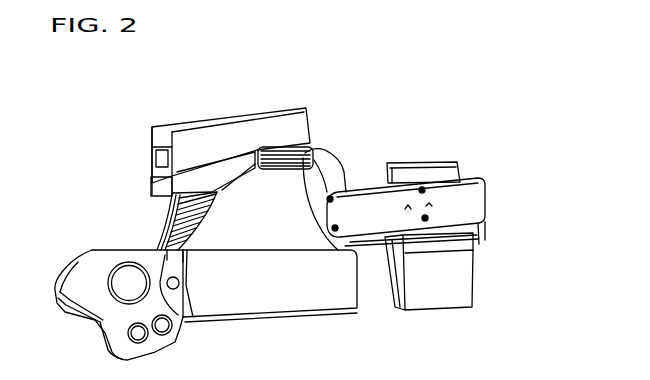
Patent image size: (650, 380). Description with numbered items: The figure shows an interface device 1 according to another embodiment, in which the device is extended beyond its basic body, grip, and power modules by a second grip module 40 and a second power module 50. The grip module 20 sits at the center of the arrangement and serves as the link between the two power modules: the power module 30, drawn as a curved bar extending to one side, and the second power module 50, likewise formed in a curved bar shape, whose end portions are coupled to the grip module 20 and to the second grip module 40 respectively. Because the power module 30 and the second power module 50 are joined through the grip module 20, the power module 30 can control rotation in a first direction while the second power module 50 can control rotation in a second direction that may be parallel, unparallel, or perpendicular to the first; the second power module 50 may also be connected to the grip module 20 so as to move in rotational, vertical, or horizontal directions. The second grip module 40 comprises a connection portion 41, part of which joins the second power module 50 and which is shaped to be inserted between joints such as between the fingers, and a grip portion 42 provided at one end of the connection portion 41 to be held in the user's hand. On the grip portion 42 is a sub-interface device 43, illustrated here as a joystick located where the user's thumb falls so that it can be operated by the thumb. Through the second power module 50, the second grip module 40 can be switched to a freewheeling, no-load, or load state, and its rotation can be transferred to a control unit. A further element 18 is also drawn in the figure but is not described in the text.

The interface device 1 is at (374, 95).
The second power module 50 is at (257, 126).
The grip module 20 is at (305, 152).
The power module 30 is at (478, 180).
The block 18 is at (458, 288).
The grip portion 42 is at (286, 300).
The second grip module 40 is at (155, 250).
The connection portion 41 is at (160, 227).
The sub-interface device 43 is at (137, 292).